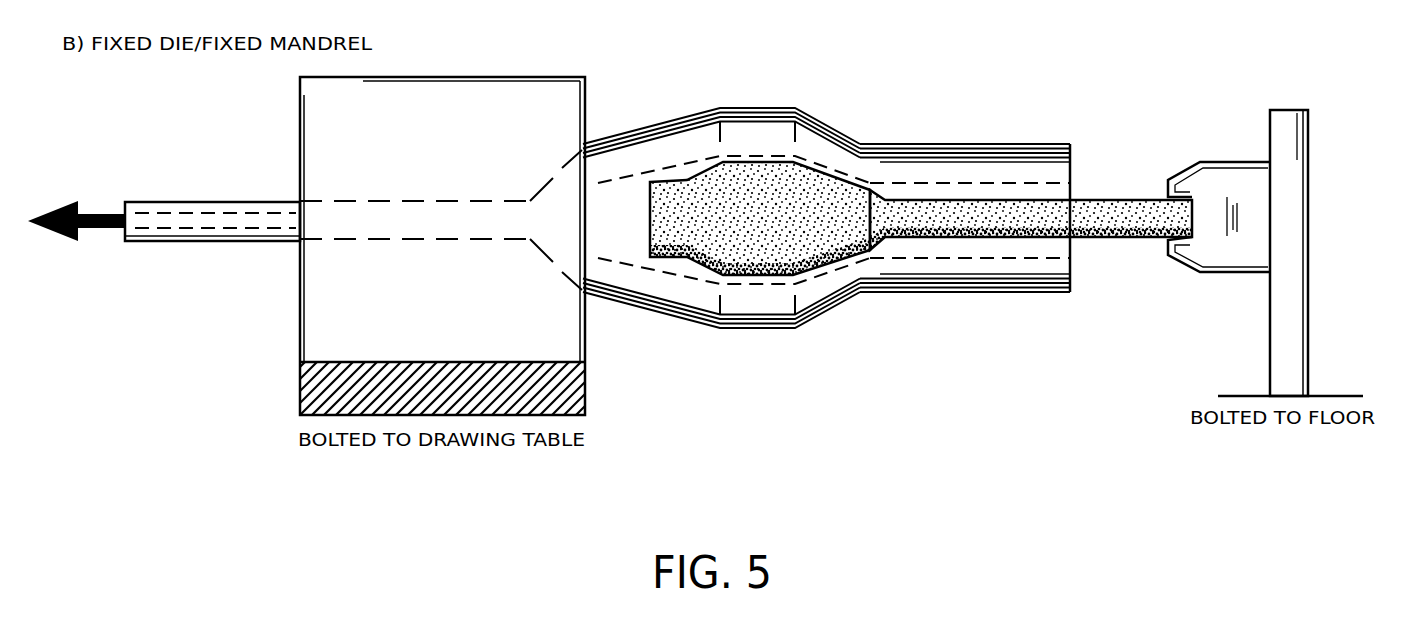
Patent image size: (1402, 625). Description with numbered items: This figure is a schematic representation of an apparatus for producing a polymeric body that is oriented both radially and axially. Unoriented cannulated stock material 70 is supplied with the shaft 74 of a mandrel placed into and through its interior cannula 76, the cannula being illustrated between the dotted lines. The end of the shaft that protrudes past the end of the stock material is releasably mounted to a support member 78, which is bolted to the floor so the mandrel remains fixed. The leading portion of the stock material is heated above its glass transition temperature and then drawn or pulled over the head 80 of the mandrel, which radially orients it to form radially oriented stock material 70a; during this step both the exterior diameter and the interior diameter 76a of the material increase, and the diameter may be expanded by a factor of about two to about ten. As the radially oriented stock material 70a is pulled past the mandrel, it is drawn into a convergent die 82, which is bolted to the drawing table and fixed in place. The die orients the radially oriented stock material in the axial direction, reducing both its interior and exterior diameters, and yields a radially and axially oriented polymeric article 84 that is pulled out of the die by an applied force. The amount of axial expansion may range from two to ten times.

The cannulated stock material 70 is at (958, 145).
The radially oriented stock material 70a is at (651, 125).
The shaft 74 is at (1030, 217).
The interior cannula 76 is at (948, 253).
The interior diameter 76a is at (648, 265).
The support member 78 is at (1240, 185).
The head 80 is at (760, 197).
The convergent die 82 is at (464, 93).
The radially and axially oriented polymeric article 84 is at (170, 243).